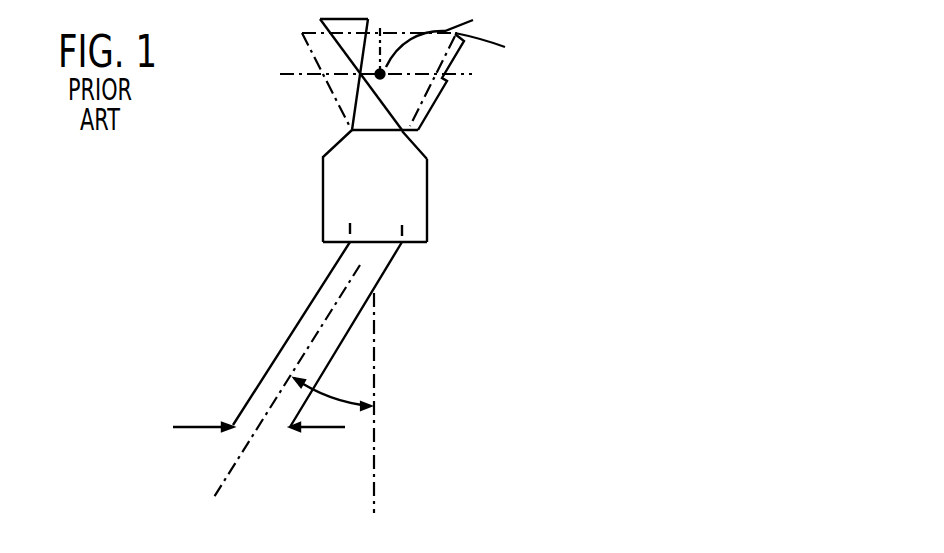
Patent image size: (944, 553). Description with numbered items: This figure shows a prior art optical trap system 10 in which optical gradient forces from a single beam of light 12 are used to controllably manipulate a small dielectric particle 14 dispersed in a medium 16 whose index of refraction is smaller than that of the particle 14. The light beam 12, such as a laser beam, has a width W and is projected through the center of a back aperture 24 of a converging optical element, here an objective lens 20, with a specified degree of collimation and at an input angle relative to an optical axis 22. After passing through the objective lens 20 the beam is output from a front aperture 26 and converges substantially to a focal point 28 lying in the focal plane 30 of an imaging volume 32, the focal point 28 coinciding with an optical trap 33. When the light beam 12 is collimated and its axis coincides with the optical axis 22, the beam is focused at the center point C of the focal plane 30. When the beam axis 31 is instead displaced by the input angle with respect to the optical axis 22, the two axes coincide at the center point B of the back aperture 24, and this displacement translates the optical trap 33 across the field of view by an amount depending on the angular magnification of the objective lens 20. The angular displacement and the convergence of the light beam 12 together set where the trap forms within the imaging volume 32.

The optical trap system 10 is at (496, 330).
The light beam 12 is at (267, 368).
The dielectric particle 14 is at (358, 74).
The medium 16 is at (543, 52).
The objective lens 20 is at (403, 180).
The optical axis 22 is at (375, 438).
The back aperture 24 is at (407, 245).
The front aperture 26 is at (370, 135).
The focal point 28 is at (348, 84).
The focal plane 30 is at (278, 73).
The beam axis 31 is at (228, 477).
The imaging volume 32 is at (390, 81).
The optical trap 33 is at (337, 96).
The center point of the back aperture B is at (377, 240).
The center point of the focal plane C is at (380, 74).
The beam width W is at (239, 453).